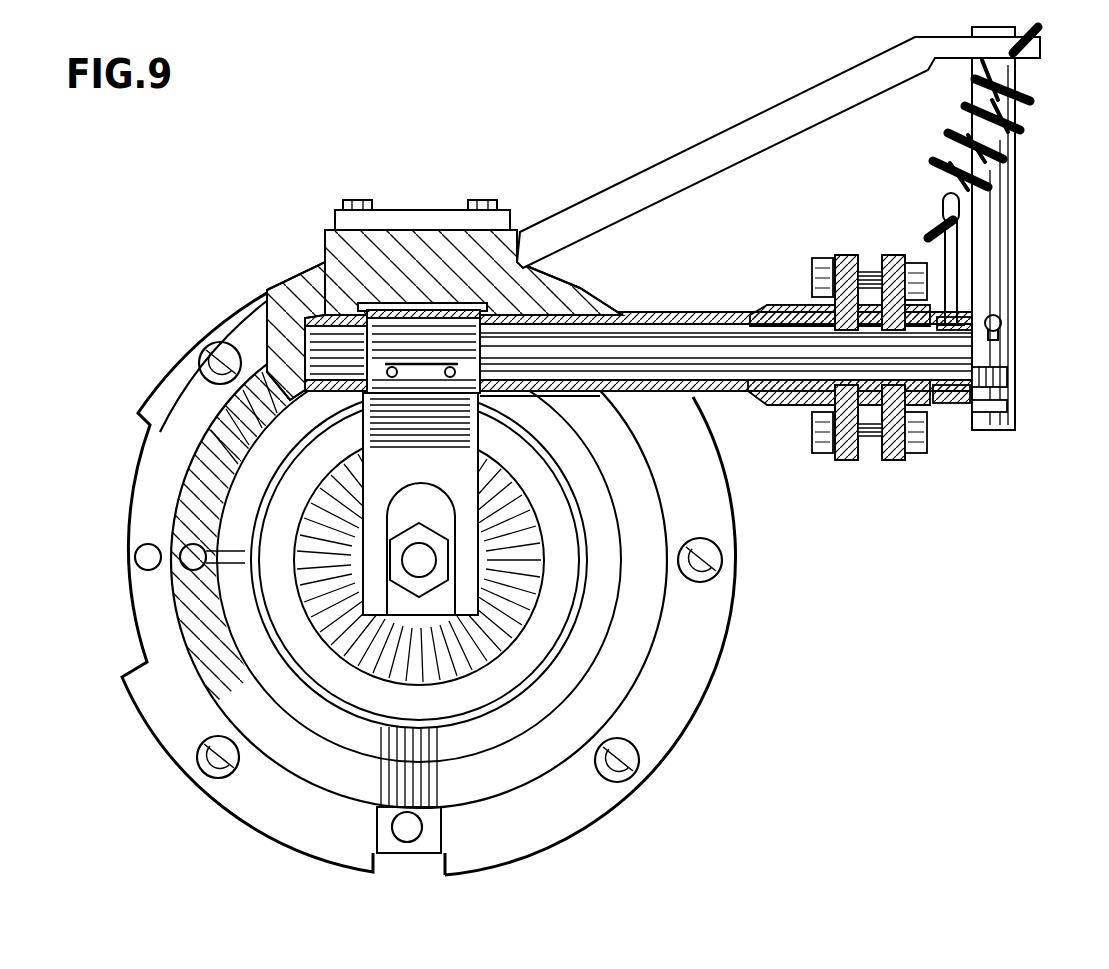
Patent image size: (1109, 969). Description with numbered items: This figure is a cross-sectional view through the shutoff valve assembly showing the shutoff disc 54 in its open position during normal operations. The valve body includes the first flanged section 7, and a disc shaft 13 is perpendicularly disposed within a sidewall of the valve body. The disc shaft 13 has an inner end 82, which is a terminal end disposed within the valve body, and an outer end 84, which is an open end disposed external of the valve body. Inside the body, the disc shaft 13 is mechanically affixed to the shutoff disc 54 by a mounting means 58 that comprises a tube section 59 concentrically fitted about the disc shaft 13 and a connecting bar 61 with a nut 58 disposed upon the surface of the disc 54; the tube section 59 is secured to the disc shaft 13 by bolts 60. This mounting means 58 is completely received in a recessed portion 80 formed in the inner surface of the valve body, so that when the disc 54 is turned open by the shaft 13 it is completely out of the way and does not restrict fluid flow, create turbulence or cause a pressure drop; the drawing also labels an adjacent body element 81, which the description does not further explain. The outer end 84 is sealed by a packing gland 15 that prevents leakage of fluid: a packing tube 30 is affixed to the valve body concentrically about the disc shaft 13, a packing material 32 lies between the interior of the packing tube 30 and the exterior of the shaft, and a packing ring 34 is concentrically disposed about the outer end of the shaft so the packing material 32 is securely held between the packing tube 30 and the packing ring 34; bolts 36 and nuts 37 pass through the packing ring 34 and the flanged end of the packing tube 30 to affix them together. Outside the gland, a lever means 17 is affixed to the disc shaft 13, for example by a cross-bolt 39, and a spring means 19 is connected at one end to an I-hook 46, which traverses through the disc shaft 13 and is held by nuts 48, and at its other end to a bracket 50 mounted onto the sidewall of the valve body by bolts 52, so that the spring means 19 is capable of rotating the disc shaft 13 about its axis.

The first flanged section 7 is at (700, 725).
The disc shaft 13 is at (740, 383).
The packing gland 15 is at (869, 462).
The lever means 17 is at (1016, 184).
The spring means 19 is at (1030, 94).
The packing tube 30 is at (698, 312).
The packing material 32 is at (800, 306).
The packing ring 34 is at (885, 256).
The bolts 36 is at (918, 256).
The nuts 37 is at (820, 258).
The cross-bolt 39 is at (1016, 326).
The I-hook 46 is at (945, 197).
The nuts 48 is at (975, 312).
The bracket 50 is at (814, 88).
The bolts 52 is at (358, 200).
The shutoff disc 54 is at (560, 598).
The mounting means 58 is at (395, 565).
The tube section 59 is at (410, 307).
The bolts 60 is at (452, 366).
The connecting bar 61 is at (470, 517).
The recessed portion 80 is at (527, 280).
The ring 81 is at (616, 428).
The inner end 82 is at (330, 310).
The outer end 84 is at (920, 392).